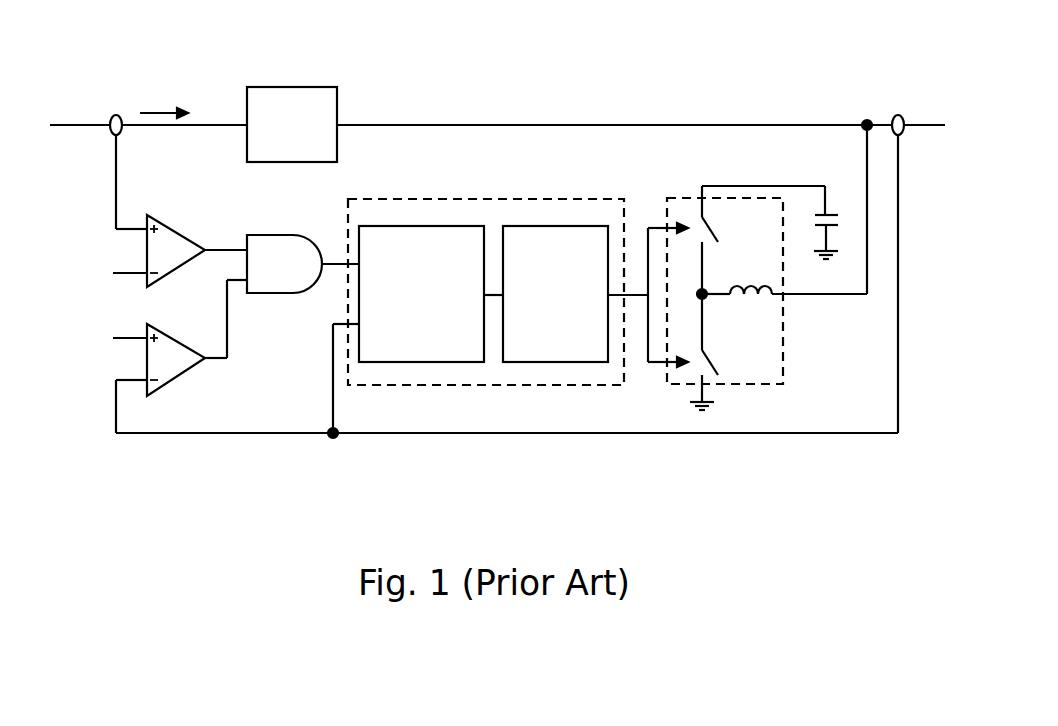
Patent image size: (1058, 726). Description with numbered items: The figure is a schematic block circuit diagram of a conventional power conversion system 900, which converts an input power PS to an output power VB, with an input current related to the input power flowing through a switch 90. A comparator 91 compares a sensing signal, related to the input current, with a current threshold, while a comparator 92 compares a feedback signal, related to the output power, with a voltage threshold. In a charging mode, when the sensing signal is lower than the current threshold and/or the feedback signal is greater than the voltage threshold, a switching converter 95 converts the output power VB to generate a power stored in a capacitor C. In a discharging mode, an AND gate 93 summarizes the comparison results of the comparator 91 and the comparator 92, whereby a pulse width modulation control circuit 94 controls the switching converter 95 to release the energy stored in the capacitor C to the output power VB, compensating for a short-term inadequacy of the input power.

The conventional power conversion system 900 is at (853, 43).
The switch 90 is at (307, 152).
The comparator 91 is at (160, 215).
The comparator 92 is at (160, 324).
The AND gate 93 is at (263, 233).
The pulse width modulation (PWM) control circuit 94 is at (572, 198).
The switching converter 95 is at (783, 365).